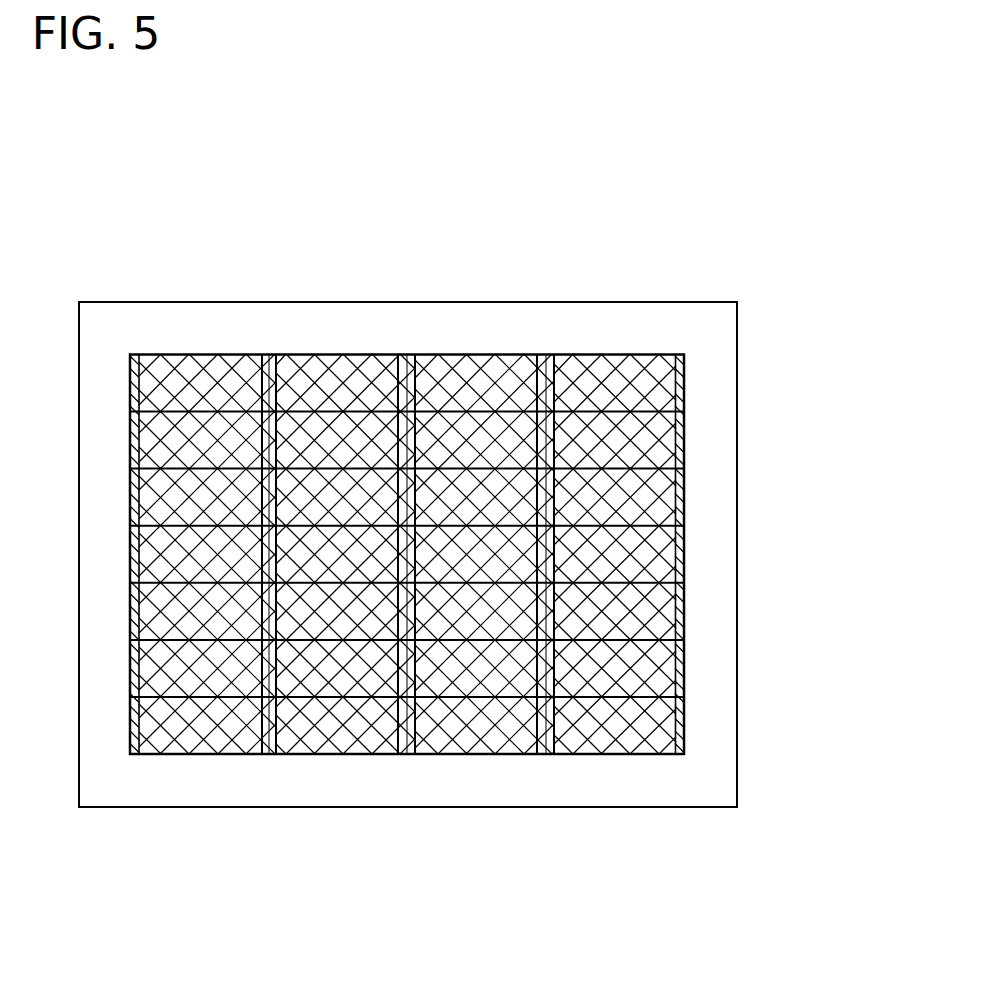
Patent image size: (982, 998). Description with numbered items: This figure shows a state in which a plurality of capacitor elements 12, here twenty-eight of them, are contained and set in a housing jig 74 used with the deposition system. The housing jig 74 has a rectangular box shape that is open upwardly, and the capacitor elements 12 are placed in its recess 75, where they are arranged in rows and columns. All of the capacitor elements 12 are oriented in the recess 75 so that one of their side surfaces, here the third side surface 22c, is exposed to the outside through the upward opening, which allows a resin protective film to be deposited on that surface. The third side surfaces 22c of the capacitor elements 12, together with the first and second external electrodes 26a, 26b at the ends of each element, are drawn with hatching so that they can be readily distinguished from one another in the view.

The capacitor element 12 is at (212, 380).
The third side surface 22c is at (313, 393).
The first external electrode 26a is at (273, 380).
The second external electrode 26b is at (376, 358).
The housing jig 74 is at (402, 297).
The recess 75 is at (500, 493).